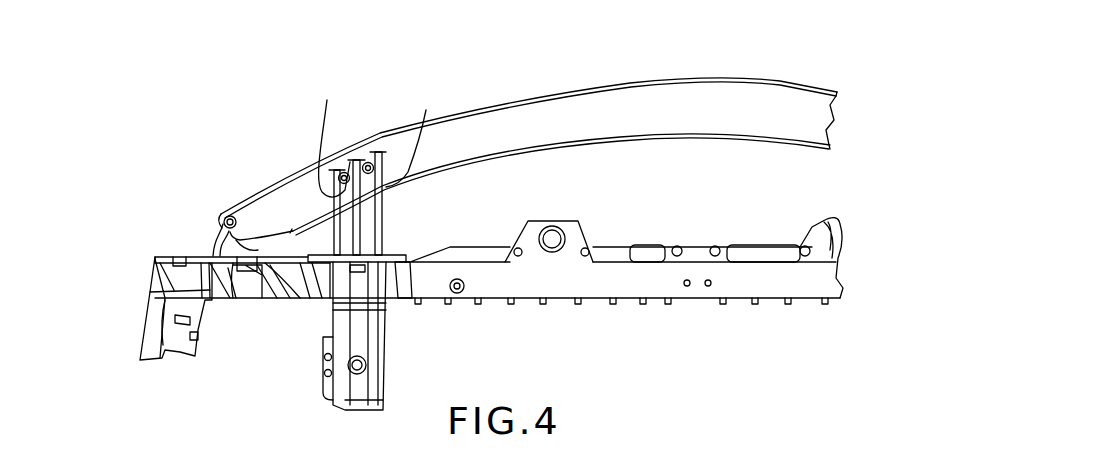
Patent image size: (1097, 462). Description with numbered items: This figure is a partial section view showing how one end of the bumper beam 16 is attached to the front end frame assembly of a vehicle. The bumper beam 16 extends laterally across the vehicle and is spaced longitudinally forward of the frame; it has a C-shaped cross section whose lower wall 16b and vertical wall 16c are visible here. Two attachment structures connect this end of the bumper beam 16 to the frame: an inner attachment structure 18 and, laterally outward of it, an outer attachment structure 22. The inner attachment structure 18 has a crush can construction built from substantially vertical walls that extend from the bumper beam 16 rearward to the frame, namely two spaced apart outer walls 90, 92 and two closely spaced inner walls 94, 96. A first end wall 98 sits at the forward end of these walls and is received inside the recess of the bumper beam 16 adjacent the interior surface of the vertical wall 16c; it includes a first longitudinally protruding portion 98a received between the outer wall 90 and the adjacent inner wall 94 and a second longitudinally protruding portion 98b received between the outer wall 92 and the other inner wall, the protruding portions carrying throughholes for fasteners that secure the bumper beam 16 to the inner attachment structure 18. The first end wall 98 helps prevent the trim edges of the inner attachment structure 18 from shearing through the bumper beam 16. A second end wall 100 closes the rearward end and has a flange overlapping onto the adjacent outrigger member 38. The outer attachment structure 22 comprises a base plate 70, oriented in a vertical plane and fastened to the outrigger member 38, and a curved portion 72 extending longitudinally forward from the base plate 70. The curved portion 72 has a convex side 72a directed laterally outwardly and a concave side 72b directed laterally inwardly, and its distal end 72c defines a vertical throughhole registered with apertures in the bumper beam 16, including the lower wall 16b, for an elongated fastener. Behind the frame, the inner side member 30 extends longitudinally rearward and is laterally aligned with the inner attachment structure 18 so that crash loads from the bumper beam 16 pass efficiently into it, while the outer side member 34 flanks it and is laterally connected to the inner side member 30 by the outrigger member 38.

The bumper beam 16 is at (529, 134).
The lower wall of the bumper beam 16b is at (613, 112).
The vertical wall of the bumper beam 16c is at (542, 93).
The inner attachment structure 18 is at (398, 209).
The outer attachment structure 22 is at (198, 198).
The inner side member 30 is at (360, 348).
The outer side member 34 is at (160, 335).
The outrigger member 38 is at (295, 282).
The base plate 70 is at (230, 284).
The curved portion 72 is at (212, 198).
The convex side 72a is at (210, 238).
The concave side 72b is at (253, 243).
The distal end of the curved portion 72c is at (201, 231).
The outer wall 90 is at (283, 172).
The outer wall 92 is at (356, 149).
The inner wall 94 is at (299, 168).
The inner wall 96 is at (412, 135).
The first end wall 98 is at (352, 167).
The first longitudinally protruding portion 98a is at (318, 167).
The second longitudinally protruding portion 98b is at (383, 176).
The second end wall 100 is at (305, 303).